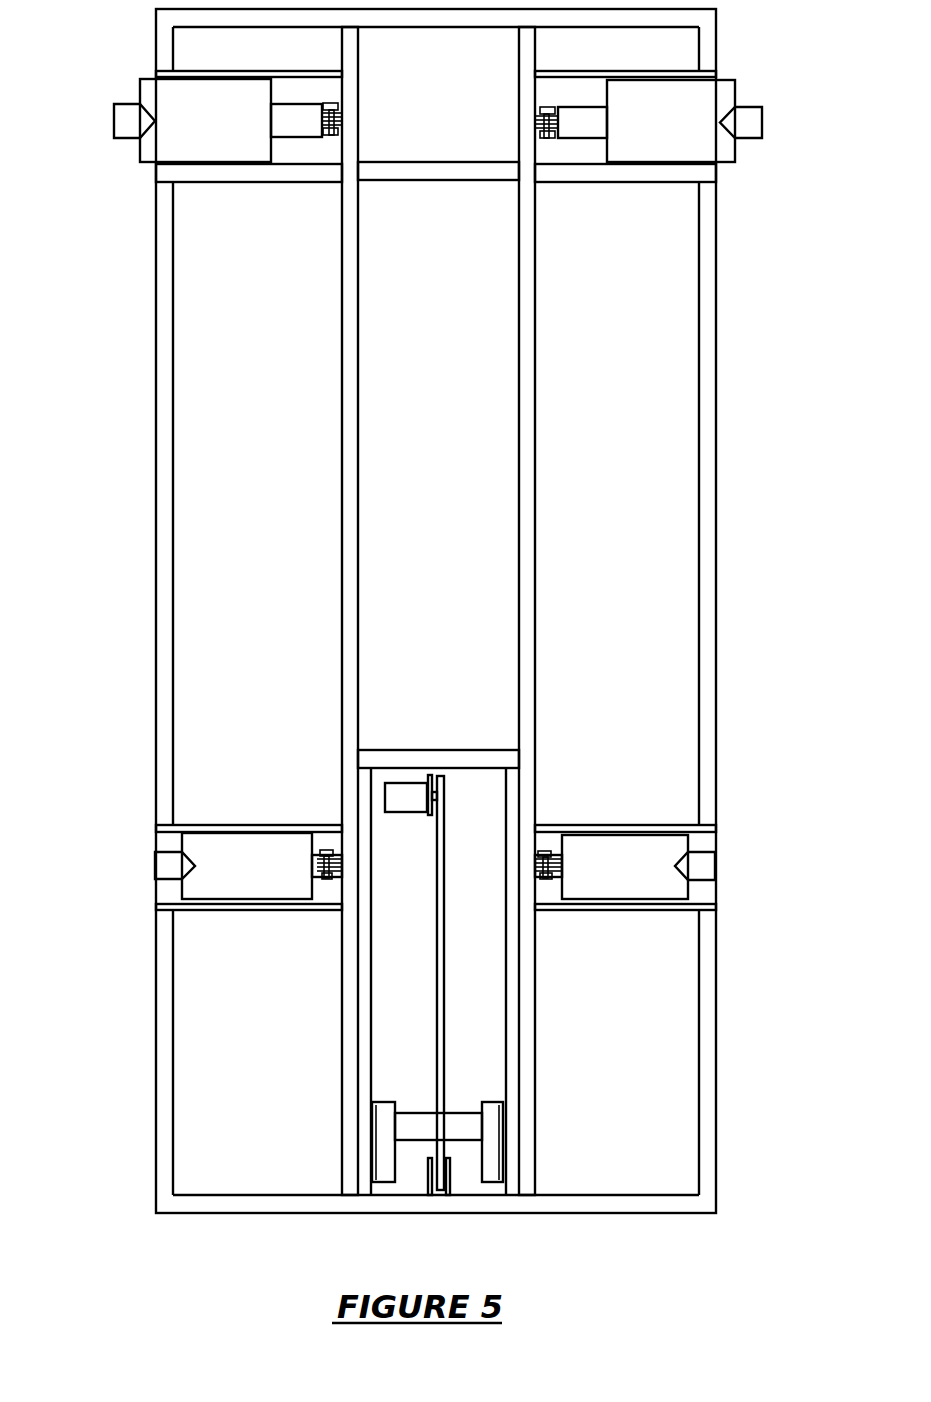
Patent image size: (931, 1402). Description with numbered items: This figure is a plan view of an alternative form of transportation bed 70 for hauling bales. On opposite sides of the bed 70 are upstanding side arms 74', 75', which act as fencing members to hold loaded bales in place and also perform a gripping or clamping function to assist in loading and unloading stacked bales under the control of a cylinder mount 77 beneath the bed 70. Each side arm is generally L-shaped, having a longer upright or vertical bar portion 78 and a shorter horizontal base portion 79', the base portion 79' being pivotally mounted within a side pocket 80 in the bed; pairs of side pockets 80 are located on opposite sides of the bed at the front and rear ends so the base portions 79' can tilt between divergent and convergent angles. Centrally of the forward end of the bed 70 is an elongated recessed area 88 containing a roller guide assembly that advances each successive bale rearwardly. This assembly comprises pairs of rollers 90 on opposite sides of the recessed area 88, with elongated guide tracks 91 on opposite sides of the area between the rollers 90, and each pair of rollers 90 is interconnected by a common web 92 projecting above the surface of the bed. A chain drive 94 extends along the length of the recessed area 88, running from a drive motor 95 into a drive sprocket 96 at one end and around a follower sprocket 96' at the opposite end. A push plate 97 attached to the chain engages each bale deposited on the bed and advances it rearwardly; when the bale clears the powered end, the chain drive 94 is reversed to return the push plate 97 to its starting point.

The bed 70 is at (152, 377).
The side arm 74' is at (121, 882).
The side arm 75' is at (85, 121).
The cylinder mount 77 is at (548, 850).
The vertical bar portion 78 is at (763, 122).
The horizontal base portion 79' is at (450, 479).
The side pocket 80 is at (715, 170).
The recessed area 88 is at (487, 1057).
The rollers 90 is at (372, 1110).
The guide track 91 is at (365, 992).
The web 92 is at (378, 1105).
The chain drive 94 is at (445, 1022).
The drive motor 95 is at (395, 798).
The drive sprocket 96 is at (449, 756).
The follower sprocket 96' is at (406, 1208).
The push plate 97 is at (413, 1105).